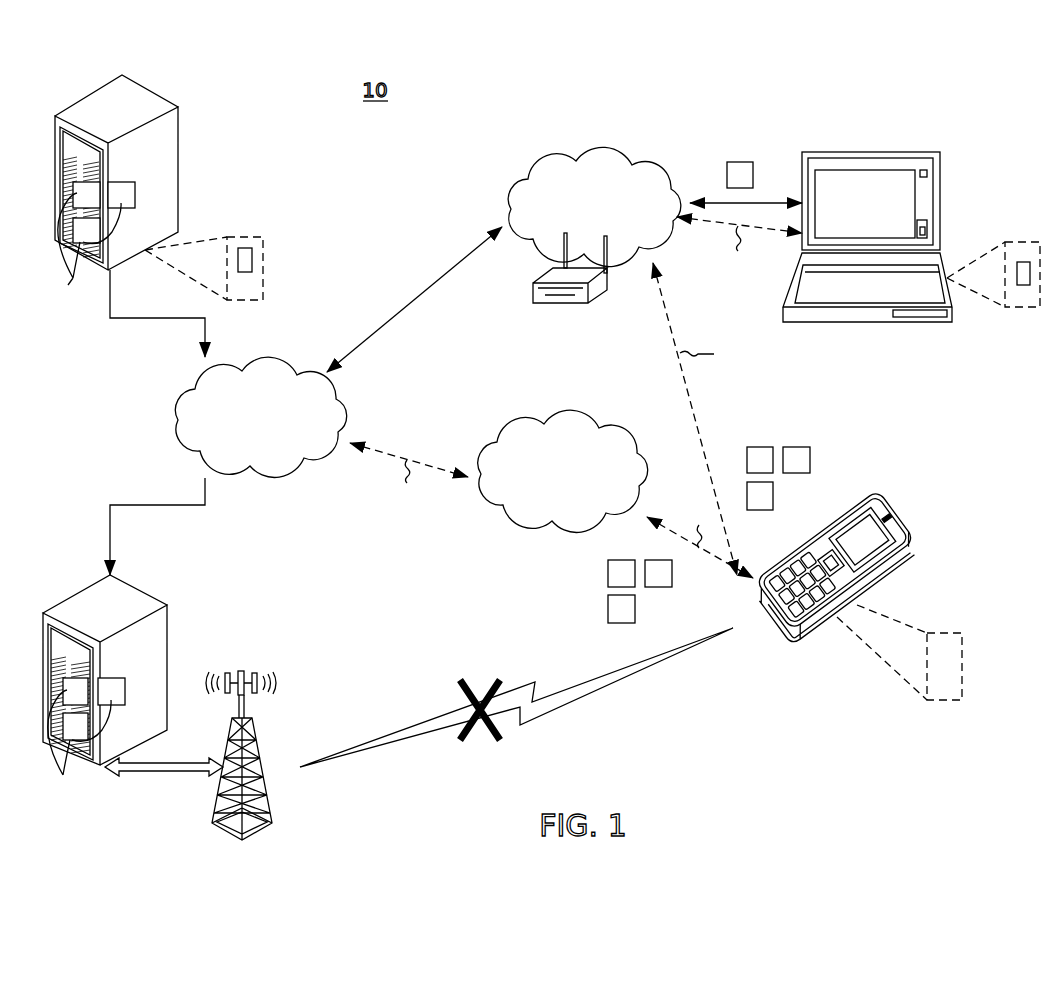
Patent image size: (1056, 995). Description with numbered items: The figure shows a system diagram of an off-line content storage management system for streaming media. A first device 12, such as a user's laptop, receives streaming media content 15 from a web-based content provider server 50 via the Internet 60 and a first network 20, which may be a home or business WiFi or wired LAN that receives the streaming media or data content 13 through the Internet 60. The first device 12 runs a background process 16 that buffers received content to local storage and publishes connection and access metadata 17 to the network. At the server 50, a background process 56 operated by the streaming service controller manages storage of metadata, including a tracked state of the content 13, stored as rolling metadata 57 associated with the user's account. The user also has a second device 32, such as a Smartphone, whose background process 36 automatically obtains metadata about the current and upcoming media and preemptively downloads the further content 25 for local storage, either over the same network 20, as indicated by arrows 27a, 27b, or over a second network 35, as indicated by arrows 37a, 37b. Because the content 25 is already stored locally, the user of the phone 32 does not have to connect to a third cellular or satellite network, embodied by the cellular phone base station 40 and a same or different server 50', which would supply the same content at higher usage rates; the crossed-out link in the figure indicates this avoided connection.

The first device 12 is at (872, 152).
The streaming media or data content 13 is at (73, 278).
The streaming media content 15 is at (739, 162).
The background process 16 is at (1024, 242).
The metadata 17 is at (1023, 285).
The first network 20 is at (580, 149).
The streaming content 25 is at (760, 446).
The arrow 27a is at (738, 247).
The arrow 27b is at (715, 357).
The second device 32 is at (870, 497).
The second network 35 is at (545, 412).
The background process 36 is at (943, 633).
The arrow 37a is at (407, 482).
The arrow 37b is at (697, 524).
The cellular phone base station 40 is at (242, 671).
The content provider server 50 is at (116, 161).
The server 50' is at (105, 660).
The background process 56 is at (263, 268).
The rolling metadata 57 is at (243, 248).
The Internet 60 is at (245, 360).